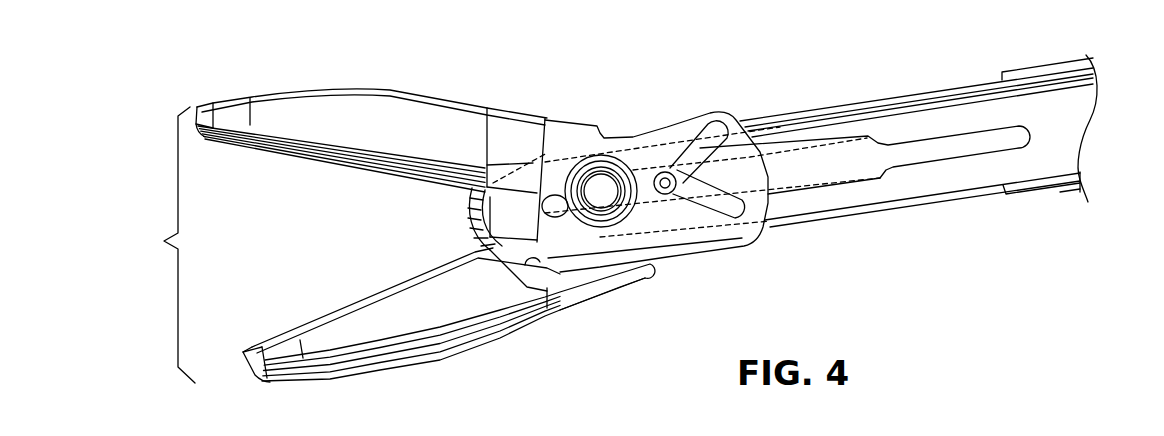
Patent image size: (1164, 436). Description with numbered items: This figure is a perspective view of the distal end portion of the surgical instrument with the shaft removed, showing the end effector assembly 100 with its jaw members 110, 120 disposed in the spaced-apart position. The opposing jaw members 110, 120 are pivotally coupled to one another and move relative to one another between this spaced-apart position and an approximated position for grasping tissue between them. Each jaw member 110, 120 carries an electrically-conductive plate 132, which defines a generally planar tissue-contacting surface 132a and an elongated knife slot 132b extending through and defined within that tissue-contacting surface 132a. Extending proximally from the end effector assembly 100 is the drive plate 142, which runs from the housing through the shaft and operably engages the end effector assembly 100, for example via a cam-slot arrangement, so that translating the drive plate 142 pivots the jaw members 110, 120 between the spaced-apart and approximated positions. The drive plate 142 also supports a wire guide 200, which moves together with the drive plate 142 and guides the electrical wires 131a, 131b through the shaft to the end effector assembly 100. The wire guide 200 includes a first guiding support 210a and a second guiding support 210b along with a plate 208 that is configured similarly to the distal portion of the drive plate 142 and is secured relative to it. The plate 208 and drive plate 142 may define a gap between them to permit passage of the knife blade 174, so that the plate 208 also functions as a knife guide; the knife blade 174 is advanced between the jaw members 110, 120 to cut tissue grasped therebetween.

The end effector assembly 100 is at (160, 245).
The jaw member 110 is at (453, 103).
The jaw member 120 is at (503, 330).
The electrically-conductive plate 132 is at (202, 143).
The tissue-contacting surface 132a is at (443, 190).
The knife slot 132b is at (297, 160).
The electrical wire 131a is at (843, 110).
The electrical wire 131b is at (868, 213).
The drive plate 142 is at (932, 205).
The knife blade 174 is at (997, 170).
The wire guide 200 is at (1053, 65).
The plate 208 is at (1018, 141).
The first guiding support 210a is at (1023, 72).
The second guiding support 210b is at (1072, 198).